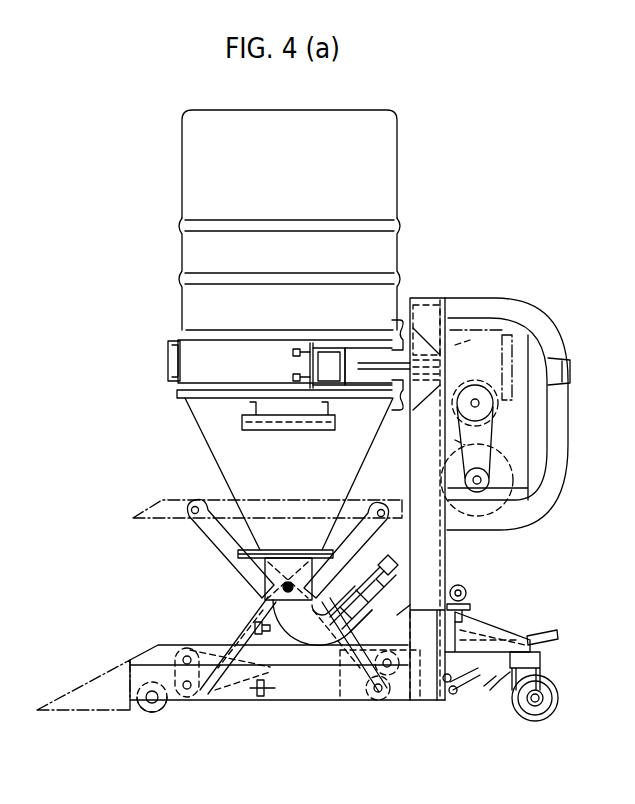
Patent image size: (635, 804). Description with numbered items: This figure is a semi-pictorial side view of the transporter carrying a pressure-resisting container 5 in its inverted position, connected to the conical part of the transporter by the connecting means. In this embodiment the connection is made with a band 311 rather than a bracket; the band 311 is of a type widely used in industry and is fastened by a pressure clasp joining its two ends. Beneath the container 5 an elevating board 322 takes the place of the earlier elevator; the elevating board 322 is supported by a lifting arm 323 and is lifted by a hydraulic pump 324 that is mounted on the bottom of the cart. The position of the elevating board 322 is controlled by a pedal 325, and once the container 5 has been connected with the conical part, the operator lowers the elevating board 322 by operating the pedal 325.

The pressure-resisting container 5 is at (183, 194).
The band 311 is at (170, 350).
The elevating board 322 is at (135, 503).
The lifting arm 323 is at (218, 545).
The hydraulic pump 324 is at (285, 700).
The pedal 325 is at (530, 640).